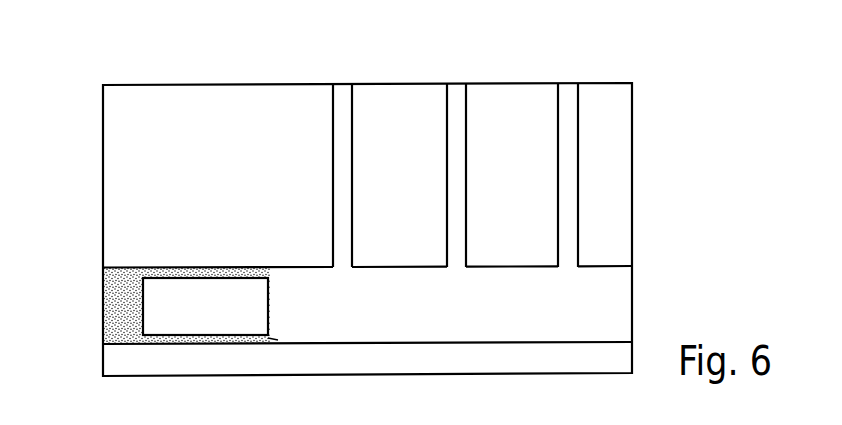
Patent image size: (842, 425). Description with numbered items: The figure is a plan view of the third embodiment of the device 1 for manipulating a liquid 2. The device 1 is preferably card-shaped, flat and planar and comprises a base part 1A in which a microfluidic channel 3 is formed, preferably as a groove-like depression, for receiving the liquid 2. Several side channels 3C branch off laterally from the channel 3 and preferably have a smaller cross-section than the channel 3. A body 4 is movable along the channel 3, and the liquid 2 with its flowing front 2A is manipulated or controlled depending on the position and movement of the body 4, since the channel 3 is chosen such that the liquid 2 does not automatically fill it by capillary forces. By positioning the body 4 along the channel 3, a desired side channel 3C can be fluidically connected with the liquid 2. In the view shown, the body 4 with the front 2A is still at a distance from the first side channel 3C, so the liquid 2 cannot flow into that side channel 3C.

The device 1 is at (100, 53).
The base part 1A is at (155, 362).
The liquid 2 is at (118, 327).
The front 2A is at (278, 340).
The channel 3 is at (125, 272).
The side channels 3C is at (344, 96).
The body 4 is at (202, 319).